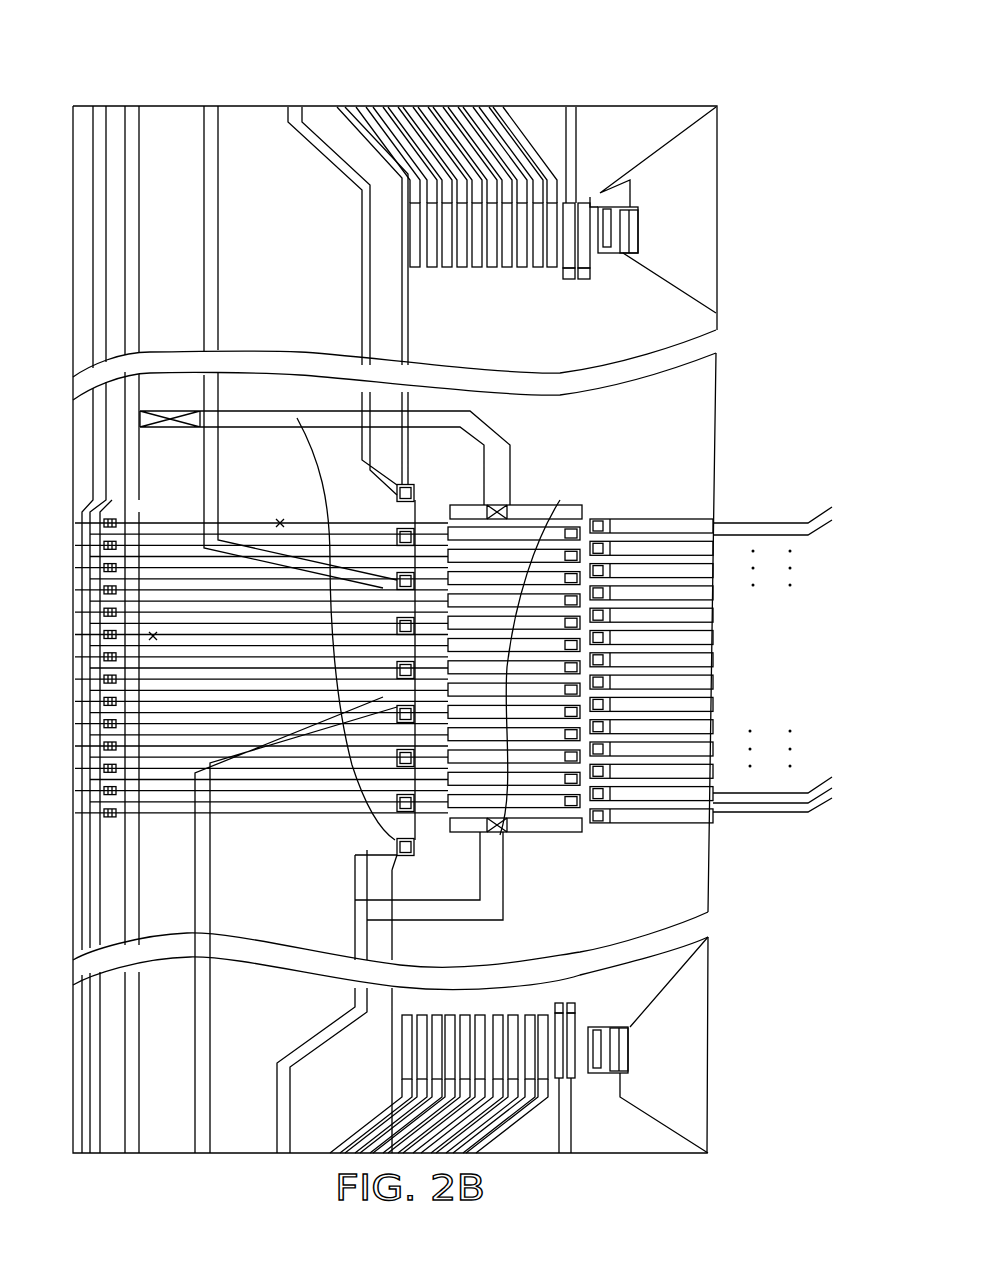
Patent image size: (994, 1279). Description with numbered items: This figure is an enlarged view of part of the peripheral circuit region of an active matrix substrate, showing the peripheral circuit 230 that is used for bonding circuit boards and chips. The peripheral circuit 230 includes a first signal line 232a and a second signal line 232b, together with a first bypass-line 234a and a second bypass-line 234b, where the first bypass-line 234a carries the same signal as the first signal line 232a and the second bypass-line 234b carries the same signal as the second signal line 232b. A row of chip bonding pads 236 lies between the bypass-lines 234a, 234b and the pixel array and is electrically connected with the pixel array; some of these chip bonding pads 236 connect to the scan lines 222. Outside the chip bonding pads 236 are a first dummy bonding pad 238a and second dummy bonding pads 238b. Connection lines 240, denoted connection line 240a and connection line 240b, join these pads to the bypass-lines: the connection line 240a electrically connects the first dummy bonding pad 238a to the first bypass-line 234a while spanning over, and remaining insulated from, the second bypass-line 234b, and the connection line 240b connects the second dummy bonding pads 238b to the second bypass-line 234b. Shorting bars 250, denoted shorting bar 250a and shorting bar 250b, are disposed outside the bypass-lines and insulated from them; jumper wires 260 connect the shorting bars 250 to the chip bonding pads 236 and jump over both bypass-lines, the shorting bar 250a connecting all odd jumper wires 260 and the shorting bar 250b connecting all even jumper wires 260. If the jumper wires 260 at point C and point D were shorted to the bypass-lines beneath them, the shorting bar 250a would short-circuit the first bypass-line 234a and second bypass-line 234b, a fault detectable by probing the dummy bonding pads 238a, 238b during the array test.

The shorting bars 250 is at (152, 46).
The shorting bar 250a is at (85, 117).
The shorting bar 250b is at (116, 117).
The first bypass-line 234a is at (172, 117).
The second bypass-line 234b is at (253, 117).
The peripheral circuit 230 is at (788, 483).
The first signal line 232a is at (535, 128).
The second signal line 232b is at (607, 152).
The chip bonding pads 236 is at (585, 262).
The first dummy bonding pad 238a is at (548, 512).
The second dummy bonding pads 238b is at (540, 622).
The jumper wires 260 is at (128, 522).
The point C is at (153, 637).
The point D is at (280, 525).
The scan lines 222 is at (809, 810).
The connection lines 240 is at (788, 948).
The connection line 240a is at (408, 855).
The connection line 240b is at (492, 850).